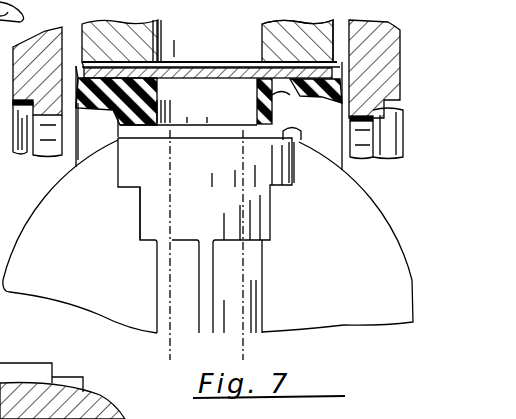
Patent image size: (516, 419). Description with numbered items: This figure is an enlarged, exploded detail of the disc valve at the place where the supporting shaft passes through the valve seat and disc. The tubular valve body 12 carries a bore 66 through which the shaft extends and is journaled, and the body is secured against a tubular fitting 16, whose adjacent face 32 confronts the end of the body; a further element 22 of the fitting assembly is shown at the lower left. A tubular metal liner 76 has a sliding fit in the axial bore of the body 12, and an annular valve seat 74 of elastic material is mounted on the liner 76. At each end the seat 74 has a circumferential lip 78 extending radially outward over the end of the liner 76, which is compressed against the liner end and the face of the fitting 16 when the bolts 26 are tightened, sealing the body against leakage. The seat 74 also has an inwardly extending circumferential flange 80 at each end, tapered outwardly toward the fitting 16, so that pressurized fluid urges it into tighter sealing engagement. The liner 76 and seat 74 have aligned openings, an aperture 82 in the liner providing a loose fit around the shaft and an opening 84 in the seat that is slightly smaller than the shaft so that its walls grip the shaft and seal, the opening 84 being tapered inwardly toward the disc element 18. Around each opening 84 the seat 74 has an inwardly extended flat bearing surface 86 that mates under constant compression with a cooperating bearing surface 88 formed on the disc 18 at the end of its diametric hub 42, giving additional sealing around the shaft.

The tubular valve body 12 is at (283, 24).
The tubular fitting 16 is at (388, 72).
The disc element 18 is at (335, 243).
The ring 22 is at (5, 370).
The bolt 26 is at (65, 380).
The face of fitting 32 is at (34, 4).
The hub 42 is at (152, 212).
The bore 66 is at (262, 31).
The annular valve seat 74 is at (123, 111).
The metal liner 76 is at (202, 72).
The circumferential lip 78 is at (82, 68).
The circumferential flange 80 is at (78, 92).
The aperture in liner 82 is at (258, 78).
The opening in valve seat 84 is at (257, 104).
The flat bearing surface 86 is at (297, 126).
The bearing surface 88 is at (296, 143).